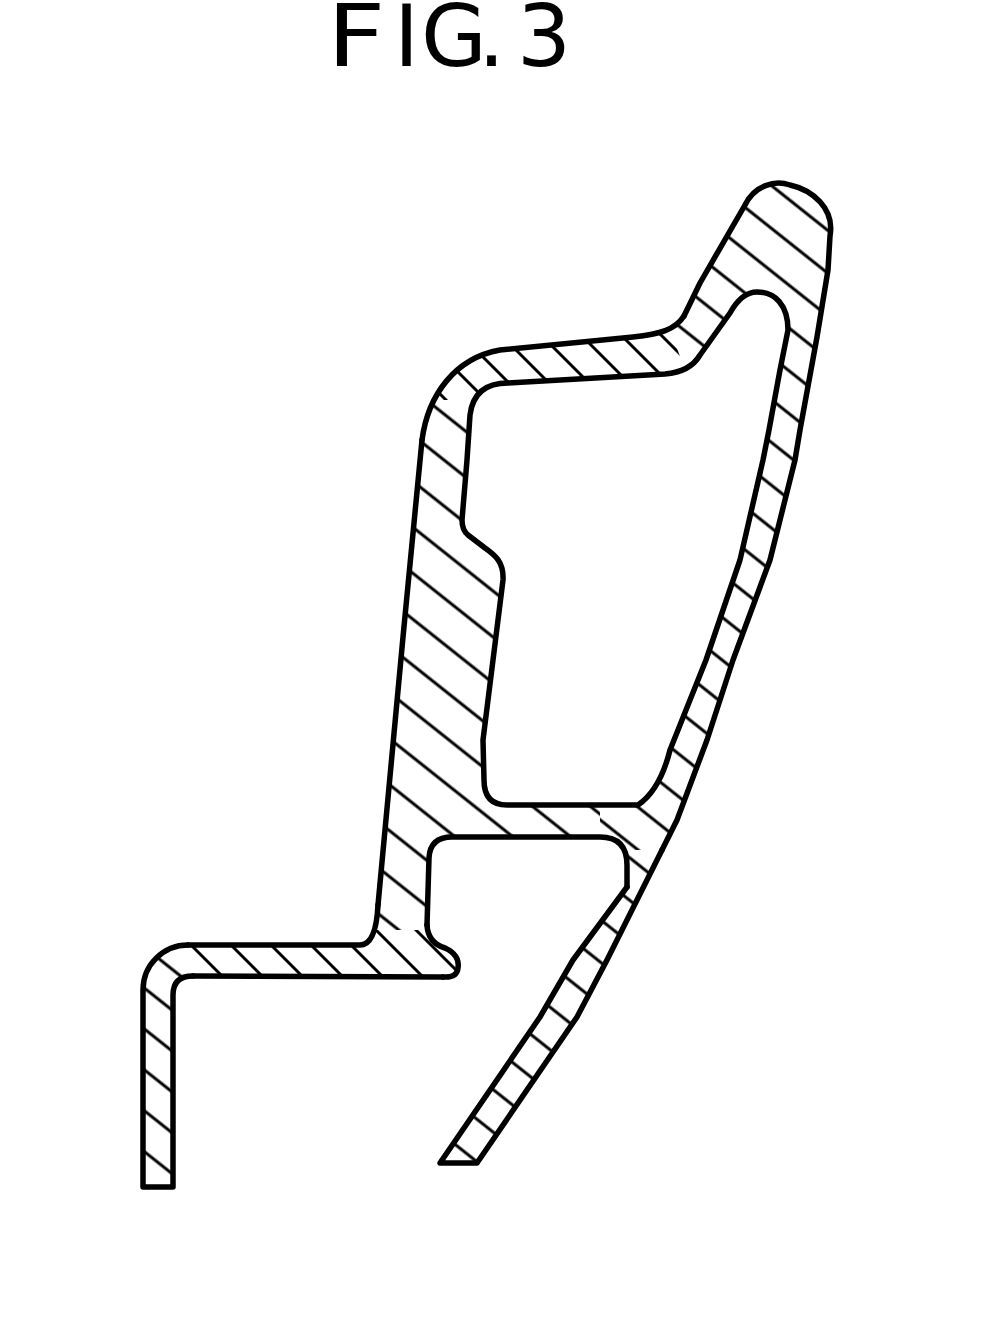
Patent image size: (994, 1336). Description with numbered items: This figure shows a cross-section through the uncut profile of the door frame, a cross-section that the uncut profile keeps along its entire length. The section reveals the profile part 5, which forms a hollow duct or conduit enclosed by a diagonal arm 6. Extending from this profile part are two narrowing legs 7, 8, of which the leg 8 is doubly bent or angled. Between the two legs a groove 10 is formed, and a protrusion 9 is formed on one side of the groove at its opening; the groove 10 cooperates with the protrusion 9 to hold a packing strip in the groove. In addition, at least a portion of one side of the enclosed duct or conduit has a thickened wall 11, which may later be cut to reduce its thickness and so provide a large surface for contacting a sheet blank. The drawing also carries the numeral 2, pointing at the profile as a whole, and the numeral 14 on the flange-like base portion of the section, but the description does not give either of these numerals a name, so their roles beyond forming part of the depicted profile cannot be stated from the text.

The sealing profile 2 is at (347, 391).
The profile part 5 is at (756, 645).
The diagonal arm 6 is at (550, 824).
The narrowing leg 7 is at (527, 1057).
The narrowing leg 8 is at (157, 1085).
The protrusion 9 is at (458, 977).
The groove 10 is at (577, 878).
The thickened wall 11 is at (440, 615).
The flange 14 is at (270, 958).